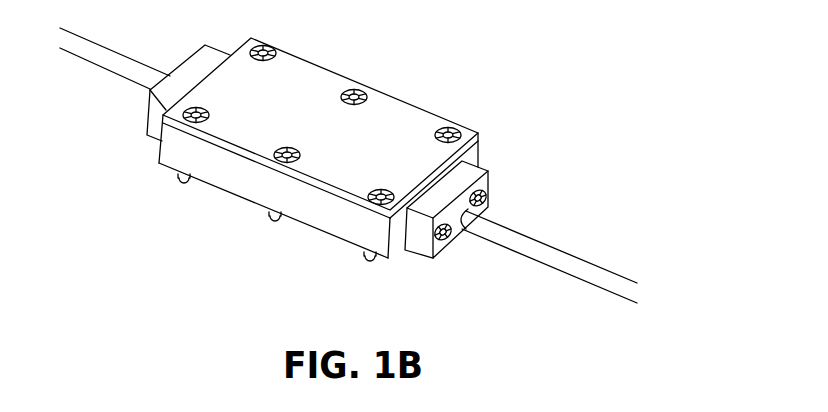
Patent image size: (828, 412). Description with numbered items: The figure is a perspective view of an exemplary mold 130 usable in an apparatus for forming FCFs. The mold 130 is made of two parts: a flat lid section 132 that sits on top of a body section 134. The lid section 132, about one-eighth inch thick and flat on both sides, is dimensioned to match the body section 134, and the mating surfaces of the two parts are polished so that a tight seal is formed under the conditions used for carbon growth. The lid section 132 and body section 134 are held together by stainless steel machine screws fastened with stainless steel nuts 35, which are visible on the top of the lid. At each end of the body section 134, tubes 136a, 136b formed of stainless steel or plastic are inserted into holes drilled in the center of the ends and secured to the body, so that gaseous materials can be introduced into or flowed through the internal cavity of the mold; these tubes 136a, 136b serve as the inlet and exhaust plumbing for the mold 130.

The mold 130 is at (367, 61).
The lid section 132 is at (335, 131).
The body section 134 is at (298, 205).
The stainless steel nuts 35 is at (456, 129).
The tube 136a is at (145, 84).
The tube 136b is at (521, 232).